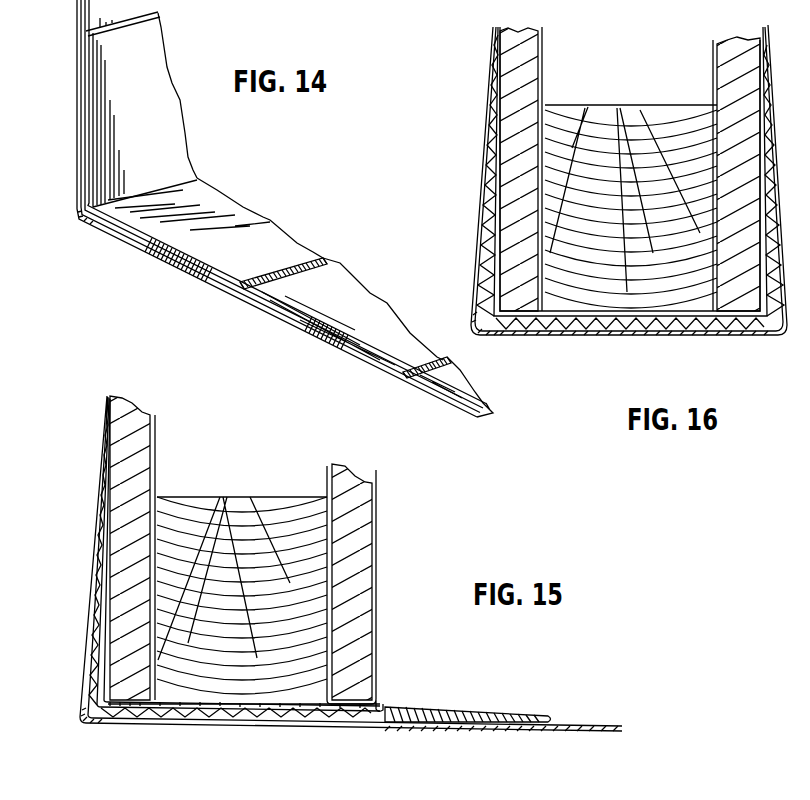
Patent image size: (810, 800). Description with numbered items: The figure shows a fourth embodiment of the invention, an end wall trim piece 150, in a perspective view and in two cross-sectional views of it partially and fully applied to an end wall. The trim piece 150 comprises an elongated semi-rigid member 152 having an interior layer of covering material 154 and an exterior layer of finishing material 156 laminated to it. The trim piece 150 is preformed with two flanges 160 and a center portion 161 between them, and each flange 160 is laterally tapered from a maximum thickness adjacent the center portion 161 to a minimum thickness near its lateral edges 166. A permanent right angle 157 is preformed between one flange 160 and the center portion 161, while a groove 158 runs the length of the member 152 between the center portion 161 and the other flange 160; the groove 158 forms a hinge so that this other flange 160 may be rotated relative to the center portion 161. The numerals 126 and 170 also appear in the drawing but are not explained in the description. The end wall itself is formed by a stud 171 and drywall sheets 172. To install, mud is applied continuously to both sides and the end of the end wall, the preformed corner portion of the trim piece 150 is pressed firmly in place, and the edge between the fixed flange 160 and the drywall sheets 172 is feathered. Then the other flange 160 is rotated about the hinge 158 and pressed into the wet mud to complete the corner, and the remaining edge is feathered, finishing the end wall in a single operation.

In FIG. 14, the wall panel 126 is at (334, 10).
In FIG. 14, the trim piece 150 is at (80, 107).
In FIG. 16, the trim piece 150 is at (645, 337).
In FIG. 15, the trim piece 150 is at (145, 733).
In FIG. 14, the elongated semi-rigid member 152 is at (107, 227).
In FIG. 16, the elongated semi-rigid member 152 is at (577, 334).
In FIG. 15, the elongated semi-rigid member 152 is at (187, 725).
In FIG. 14, the interior layer of covering material 154 is at (187, 156).
In FIG. 15, the interior layer of covering material 154 is at (93, 617).
In FIG. 14, the exterior layer of finishing material 156 is at (188, 272).
In FIG. 15, the exterior layer of finishing material 156 is at (93, 660).
In FIG. 14, the right angle 157 is at (80, 232).
In FIG. 16, the right angle 157 is at (495, 334).
In FIG. 15, the right angle 157 is at (88, 727).
In FIG. 14, the groove 158 is at (308, 258).
In FIG. 16, the groove 158 is at (757, 340).
In FIG. 15, the groove 158 is at (382, 708).
In FIG. 14, the flanges 160 is at (83, 163).
In FIG. 15, the flanges 160 is at (90, 563).
In FIG. 14, the center portion 161 is at (140, 243).
In FIG. 15, the center portion 161 is at (250, 723).
In FIG. 14, the lateral edges 166 is at (80, 58).
In FIG. 14, the end edge 170 is at (80, 6).
In FIG. 16, the stud 171 is at (607, 117).
In FIG. 15, the stud 171 is at (240, 505).
In FIG. 16, the drywall sheets 172 is at (530, 97).
In FIG. 15, the drywall sheets 172 is at (148, 482).